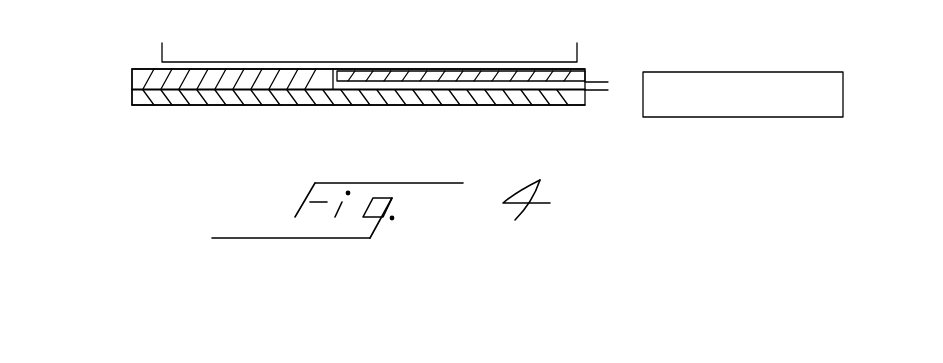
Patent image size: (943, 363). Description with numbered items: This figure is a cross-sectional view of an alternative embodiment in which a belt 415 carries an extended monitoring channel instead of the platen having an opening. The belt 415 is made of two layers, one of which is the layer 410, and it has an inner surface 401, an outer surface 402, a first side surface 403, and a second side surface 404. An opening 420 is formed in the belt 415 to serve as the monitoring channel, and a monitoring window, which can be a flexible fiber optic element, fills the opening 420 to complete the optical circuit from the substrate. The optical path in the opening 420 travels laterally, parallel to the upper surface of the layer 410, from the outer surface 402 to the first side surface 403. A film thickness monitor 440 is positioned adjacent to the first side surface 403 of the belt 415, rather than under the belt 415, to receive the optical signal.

The inner surface 401 is at (248, 110).
The outer surface 402 is at (138, 62).
The first side surface 403 is at (596, 70).
The second side surface 404 is at (122, 89).
The layer 410 is at (123, 102).
The belt 415 is at (451, 123).
The opening 420 is at (330, 78).
The film thickness monitor 440 is at (750, 72).